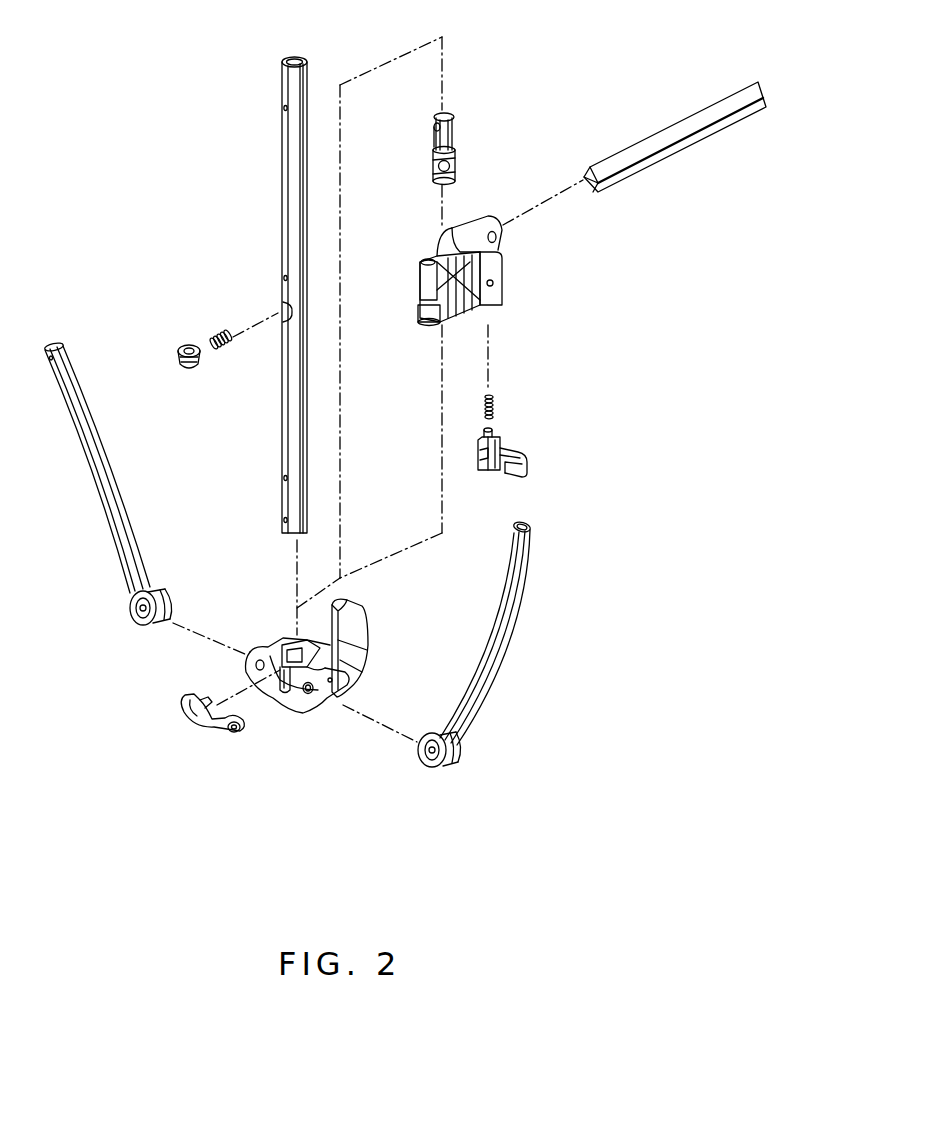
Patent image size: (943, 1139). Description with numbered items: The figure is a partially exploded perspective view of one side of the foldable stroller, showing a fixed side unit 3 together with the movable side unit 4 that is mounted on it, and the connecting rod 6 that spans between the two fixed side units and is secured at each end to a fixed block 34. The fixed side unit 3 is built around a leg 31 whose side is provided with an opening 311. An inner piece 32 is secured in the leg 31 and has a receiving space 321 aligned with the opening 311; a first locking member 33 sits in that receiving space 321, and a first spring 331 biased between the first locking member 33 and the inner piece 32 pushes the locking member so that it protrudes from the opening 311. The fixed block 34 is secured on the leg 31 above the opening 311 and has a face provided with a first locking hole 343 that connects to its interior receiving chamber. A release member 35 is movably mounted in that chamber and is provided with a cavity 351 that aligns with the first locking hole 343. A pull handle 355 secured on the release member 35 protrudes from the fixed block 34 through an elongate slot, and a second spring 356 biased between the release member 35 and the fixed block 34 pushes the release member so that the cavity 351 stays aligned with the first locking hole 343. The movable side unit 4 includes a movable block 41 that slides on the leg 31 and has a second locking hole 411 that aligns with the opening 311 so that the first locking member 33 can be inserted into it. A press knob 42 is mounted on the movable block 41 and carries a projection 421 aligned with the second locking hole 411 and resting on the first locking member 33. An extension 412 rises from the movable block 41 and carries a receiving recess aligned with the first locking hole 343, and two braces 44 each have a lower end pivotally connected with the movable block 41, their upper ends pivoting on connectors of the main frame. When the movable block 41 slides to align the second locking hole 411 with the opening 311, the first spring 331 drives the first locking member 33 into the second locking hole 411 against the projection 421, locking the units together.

The fixed side unit 3 is at (647, 325).
The leg 31 is at (287, 92).
The opening 311 is at (283, 308).
The inner piece 32 is at (449, 112).
The receiving space 321 is at (467, 170).
The first locking member 33 is at (182, 352).
The first spring 331 is at (225, 350).
The fixed block 34 is at (455, 293).
The first locking hole 343 is at (493, 281).
The release member 35 is at (483, 473).
The cavity 351 is at (497, 445).
The pull handle 355 is at (527, 467).
The second spring 356 is at (493, 400).
The movable side unit 4 is at (508, 733).
The movable block 41 is at (307, 700).
The second locking hole 411 is at (288, 687).
The extension 412 is at (357, 627).
The press knob 42 is at (205, 723).
The projection 421 is at (205, 703).
The brace 44 is at (515, 599).
The connecting rod 6 is at (700, 120).